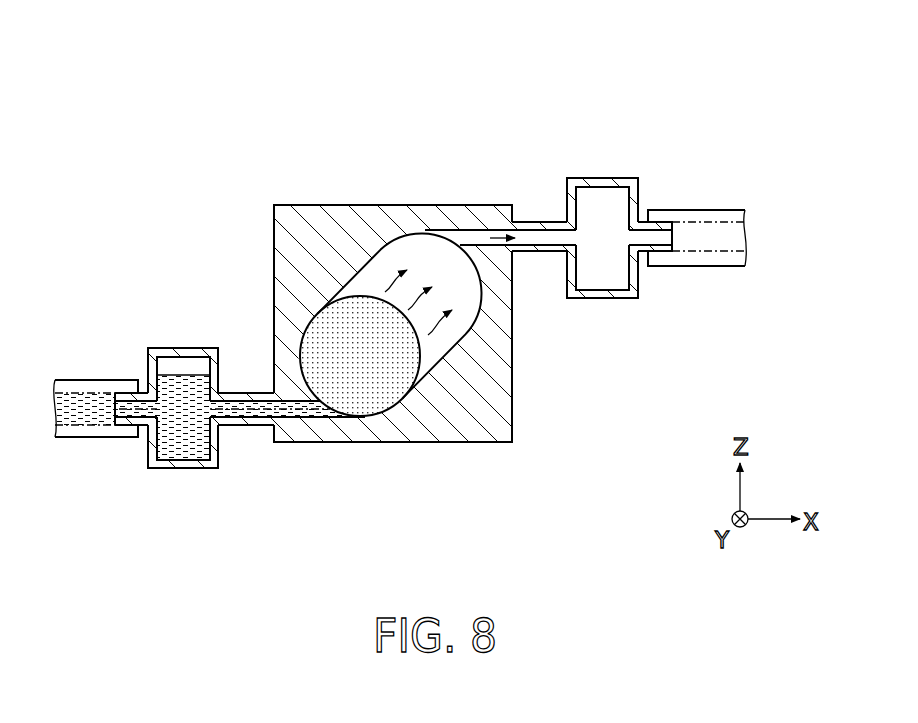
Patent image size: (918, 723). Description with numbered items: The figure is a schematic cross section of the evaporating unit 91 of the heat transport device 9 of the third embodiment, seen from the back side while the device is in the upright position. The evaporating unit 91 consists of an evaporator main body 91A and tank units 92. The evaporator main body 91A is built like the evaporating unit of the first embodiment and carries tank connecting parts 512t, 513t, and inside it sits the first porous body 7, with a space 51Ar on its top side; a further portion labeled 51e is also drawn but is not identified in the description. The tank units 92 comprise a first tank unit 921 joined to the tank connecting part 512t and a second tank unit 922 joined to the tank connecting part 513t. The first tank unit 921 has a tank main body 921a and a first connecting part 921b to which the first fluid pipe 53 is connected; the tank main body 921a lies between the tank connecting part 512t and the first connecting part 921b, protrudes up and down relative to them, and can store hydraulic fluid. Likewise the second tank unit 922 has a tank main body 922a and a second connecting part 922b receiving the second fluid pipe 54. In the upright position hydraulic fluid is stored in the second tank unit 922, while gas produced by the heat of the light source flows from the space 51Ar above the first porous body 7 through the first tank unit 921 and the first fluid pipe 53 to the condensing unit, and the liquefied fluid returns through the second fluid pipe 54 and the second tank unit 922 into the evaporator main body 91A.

The heat transport device 9 is at (459, 274).
The evaporating unit 91 is at (625, 77).
The evaporator main body 91A is at (293, 167).
The end portion of accommodating chamber 51e is at (370, 287).
The space 51Ar is at (413, 247).
The tank connecting part 512t is at (543, 222).
The tank connecting part 513t is at (247, 420).
The first porous body 7 is at (373, 395).
The tank units 92 is at (394, 327).
The first tank unit 921 is at (598, 182).
The tank main body 921a is at (598, 295).
The first connecting part 921b is at (645, 253).
The second tank unit 922 is at (188, 468).
The tank main body 922a is at (188, 352).
The second connecting part 922b is at (143, 422).
The first fluid pipe 53 is at (677, 215).
The second fluid pipe 54 is at (107, 388).